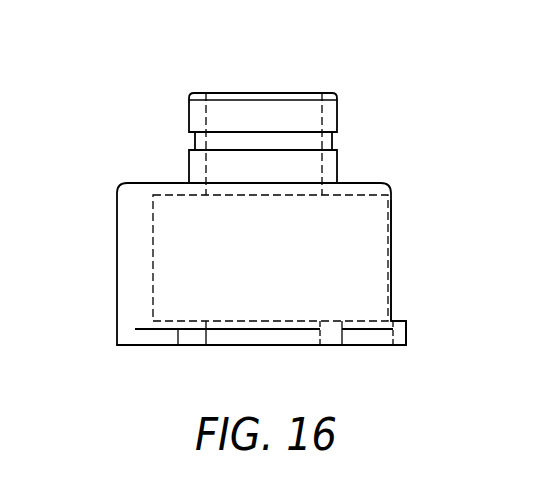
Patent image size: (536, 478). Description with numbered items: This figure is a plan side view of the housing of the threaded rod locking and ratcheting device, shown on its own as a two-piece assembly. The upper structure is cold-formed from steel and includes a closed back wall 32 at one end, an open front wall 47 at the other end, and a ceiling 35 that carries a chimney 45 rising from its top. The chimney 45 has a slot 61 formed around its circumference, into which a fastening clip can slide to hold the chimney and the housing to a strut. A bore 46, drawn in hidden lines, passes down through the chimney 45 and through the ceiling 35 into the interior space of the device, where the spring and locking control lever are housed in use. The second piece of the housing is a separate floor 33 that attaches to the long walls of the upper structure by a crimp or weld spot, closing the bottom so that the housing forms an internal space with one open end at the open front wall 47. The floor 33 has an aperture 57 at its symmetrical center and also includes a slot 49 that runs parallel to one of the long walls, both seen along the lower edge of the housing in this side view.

The closed back wall 32 is at (117, 268).
The floor 33 is at (142, 345).
The ceiling 35 is at (147, 183).
The chimney 45 is at (337, 100).
The bore 46 is at (264, 92).
The open front wall 47 is at (391, 257).
The slot 49 is at (382, 345).
The aperture 57 is at (262, 345).
The slot 61 is at (332, 140).